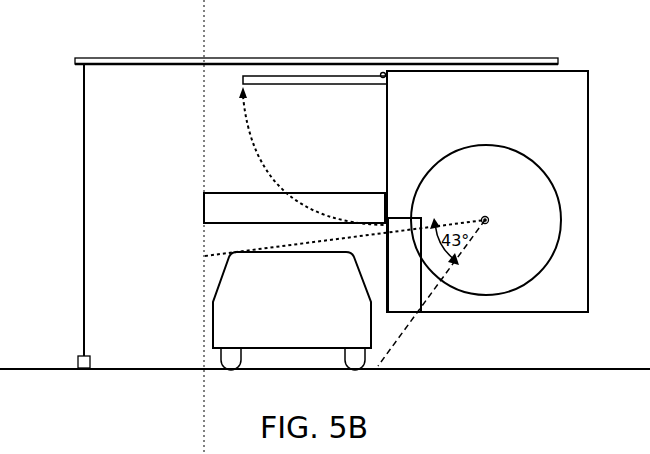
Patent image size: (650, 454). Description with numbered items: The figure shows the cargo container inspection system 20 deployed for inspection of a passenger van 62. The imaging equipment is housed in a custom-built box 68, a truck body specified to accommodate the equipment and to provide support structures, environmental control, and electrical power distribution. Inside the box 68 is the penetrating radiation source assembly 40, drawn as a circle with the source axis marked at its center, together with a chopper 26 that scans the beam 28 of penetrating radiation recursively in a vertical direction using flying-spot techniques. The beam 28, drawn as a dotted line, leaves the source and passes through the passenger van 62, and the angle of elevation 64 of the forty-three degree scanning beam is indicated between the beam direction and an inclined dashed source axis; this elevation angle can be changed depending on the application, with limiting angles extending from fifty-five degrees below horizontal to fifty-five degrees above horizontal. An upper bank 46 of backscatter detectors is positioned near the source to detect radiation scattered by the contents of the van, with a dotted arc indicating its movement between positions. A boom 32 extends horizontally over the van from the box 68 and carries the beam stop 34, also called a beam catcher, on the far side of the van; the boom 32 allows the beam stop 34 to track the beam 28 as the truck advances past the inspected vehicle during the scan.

The cargo container inspection system 20 is at (572, 34).
The chopper 26 is at (526, 167).
The beam 28 is at (206, 258).
The boom 32 is at (165, 61).
The beam stop 34 is at (83, 269).
The penetrating radiation source assembly 40 is at (489, 217).
The upper bank of detectors 46 is at (348, 193).
The passenger van 62 is at (271, 291).
The angle of elevation 64 is at (448, 263).
The box 68 is at (580, 92).